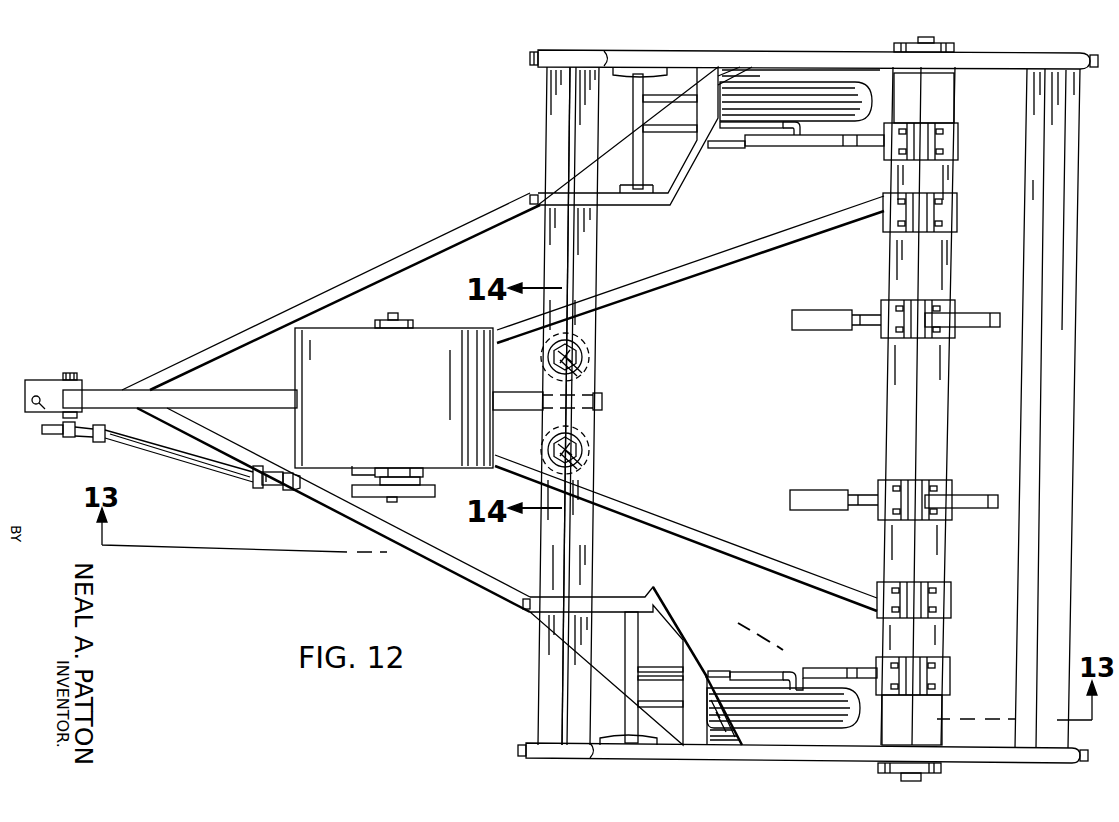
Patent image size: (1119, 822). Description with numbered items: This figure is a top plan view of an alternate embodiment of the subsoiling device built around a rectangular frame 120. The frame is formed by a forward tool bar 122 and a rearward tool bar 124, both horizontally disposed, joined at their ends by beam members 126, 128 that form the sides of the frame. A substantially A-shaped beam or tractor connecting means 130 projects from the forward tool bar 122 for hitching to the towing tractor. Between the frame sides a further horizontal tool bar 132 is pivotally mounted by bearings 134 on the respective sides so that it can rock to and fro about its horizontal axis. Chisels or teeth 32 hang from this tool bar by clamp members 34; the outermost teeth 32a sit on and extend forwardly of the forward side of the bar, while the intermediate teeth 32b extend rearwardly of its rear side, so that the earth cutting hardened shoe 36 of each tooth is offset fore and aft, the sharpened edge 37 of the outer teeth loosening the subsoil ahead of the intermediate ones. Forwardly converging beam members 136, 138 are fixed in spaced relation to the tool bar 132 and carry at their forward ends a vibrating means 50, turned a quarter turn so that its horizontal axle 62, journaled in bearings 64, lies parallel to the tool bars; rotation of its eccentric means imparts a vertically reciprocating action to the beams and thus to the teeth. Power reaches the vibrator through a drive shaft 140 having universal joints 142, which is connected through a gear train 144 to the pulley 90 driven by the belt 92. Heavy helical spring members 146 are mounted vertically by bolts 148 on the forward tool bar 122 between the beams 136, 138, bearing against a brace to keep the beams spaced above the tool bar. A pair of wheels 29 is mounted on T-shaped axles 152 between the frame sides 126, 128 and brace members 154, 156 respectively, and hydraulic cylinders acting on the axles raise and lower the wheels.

The wheels 29 is at (825, 82).
The chisels or teeth 32 is at (832, 155).
The outermost teeth 32a is at (790, 135).
The intermediate teeth 32b is at (970, 328).
The clamp members 34 is at (958, 140).
The earth cutting hardened shoe or plate 36 is at (737, 148).
The sharpened edge 37 is at (840, 146).
The vibrating means 50 is at (290, 378).
The horizontal axle 62 is at (392, 313).
The bearings 64 is at (413, 324).
The pulley 90 is at (410, 500).
The belt 92 is at (436, 490).
The rectangular frame 120 is at (540, 128).
The forward tool bar 122 is at (545, 166).
The rearward tool bar 124 is at (1026, 185).
The beam member 126 is at (658, 51).
The beam member 128 is at (665, 758).
The A-shaped beam or tractor connecting means 130 is at (308, 297).
The tool bar 132 is at (950, 275).
The bearings 134 is at (894, 47).
The forwardly converging beam member 136 is at (655, 288).
The forwardly converging beam member 138 is at (663, 488).
The drive shaft 140 is at (206, 470).
The universal joints 142 is at (99, 442).
The gear train 144 is at (424, 473).
The helical spring members 146 is at (600, 378).
The bolts 148 is at (590, 357).
The T-shaped axles 152 is at (628, 150).
The brace member 154 is at (655, 205).
The brace member 156 is at (655, 590).